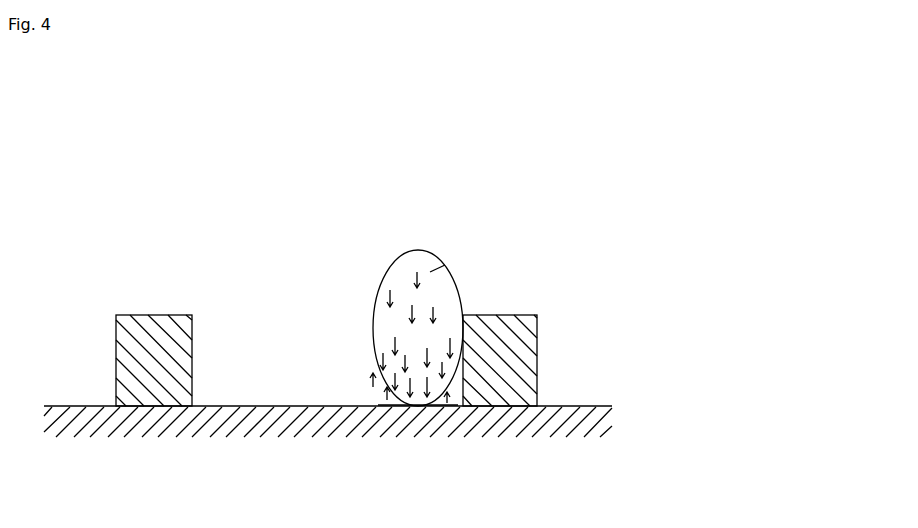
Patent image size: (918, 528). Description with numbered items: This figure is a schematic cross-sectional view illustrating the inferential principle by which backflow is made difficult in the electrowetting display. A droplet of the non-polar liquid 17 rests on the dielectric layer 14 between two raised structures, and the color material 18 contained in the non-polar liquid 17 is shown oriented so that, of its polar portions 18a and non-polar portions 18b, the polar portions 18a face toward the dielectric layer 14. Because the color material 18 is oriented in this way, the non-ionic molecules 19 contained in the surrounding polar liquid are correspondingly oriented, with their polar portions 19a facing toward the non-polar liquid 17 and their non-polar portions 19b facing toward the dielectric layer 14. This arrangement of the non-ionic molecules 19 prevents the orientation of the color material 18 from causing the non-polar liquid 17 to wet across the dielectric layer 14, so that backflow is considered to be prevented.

The dielectric layer 14 is at (214, 405).
The non-polar liquid 17 is at (432, 250).
The color material 18 is at (445, 265).
The polar portions 18a is at (418, 278).
The non-polar portions 18b is at (418, 272).
The non-ionic molecules 19 is at (455, 388).
The polar portions 19a is at (370, 375).
The non-polar portions 19b is at (372, 380).